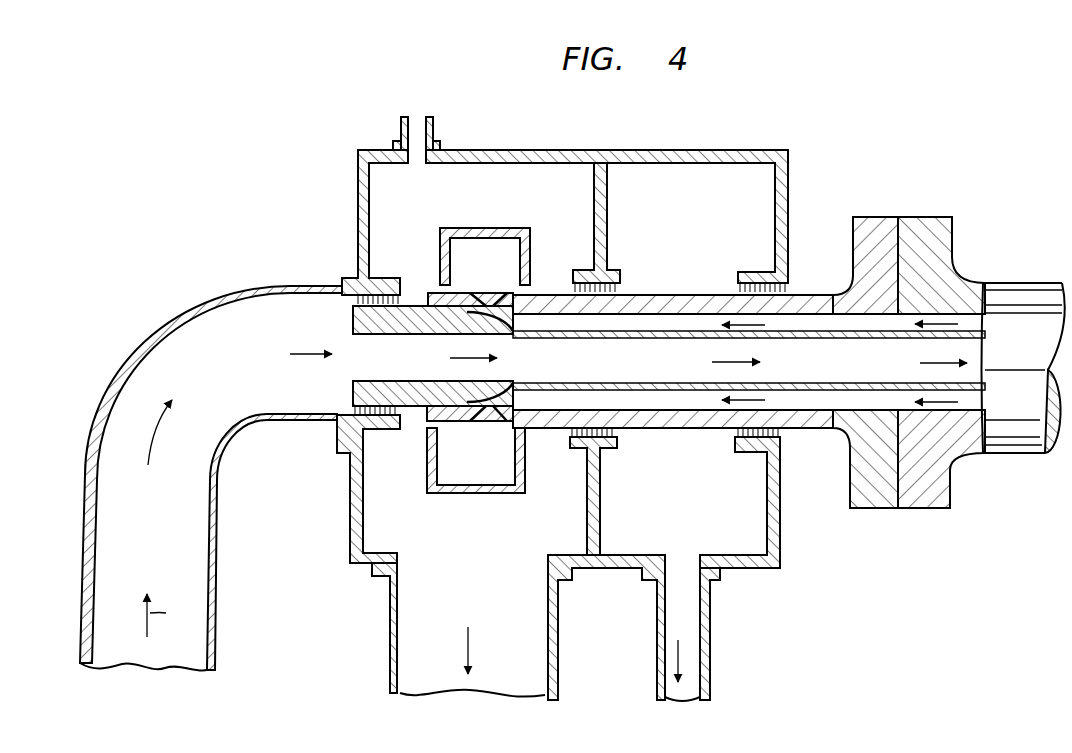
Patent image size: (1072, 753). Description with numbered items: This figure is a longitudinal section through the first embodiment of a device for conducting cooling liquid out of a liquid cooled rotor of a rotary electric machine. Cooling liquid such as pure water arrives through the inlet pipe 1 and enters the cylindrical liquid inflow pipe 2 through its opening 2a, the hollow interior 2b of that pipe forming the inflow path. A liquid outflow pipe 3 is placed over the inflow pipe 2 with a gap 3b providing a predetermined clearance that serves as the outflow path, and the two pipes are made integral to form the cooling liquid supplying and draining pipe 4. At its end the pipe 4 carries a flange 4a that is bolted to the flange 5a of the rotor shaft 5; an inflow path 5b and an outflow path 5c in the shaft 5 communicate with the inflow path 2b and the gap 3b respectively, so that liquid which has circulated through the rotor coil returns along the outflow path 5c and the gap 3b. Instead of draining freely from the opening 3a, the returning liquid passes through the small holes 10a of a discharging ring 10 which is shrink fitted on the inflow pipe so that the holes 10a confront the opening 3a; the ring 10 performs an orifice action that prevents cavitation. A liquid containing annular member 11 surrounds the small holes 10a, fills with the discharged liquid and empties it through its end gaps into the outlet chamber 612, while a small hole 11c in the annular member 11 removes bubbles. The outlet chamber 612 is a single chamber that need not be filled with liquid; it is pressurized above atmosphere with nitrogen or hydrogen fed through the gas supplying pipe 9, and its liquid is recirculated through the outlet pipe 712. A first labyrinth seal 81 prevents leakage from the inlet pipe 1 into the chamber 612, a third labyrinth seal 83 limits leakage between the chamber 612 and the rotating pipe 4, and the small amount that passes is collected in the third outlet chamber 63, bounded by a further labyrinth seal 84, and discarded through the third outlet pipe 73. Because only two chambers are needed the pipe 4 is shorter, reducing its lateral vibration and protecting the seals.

The inlet pipe 1 is at (217, 562).
The liquid inflow pipe 2 is at (418, 306).
The opening 2a is at (352, 360).
The hollow interior 2b is at (403, 380).
The liquid outflow pipe 3 is at (660, 294).
The opening 3a is at (505, 325).
The gap 3b is at (580, 338).
The cooling liquid supplying and draining pipe 4 is at (686, 374).
The flange 4a is at (870, 217).
The rotor shaft 5 is at (1040, 247).
The flange 5a is at (936, 217).
The inflow path 5b is at (978, 340).
The outflow path 5c is at (975, 406).
The gas supplying pipe 9 is at (433, 125).
The discharging ring 10 is at (455, 300).
The small holes 10a is at (507, 292).
The liquid containing annular member 11 is at (530, 232).
The small hole 11c is at (480, 232).
The third outlet chamber 63 is at (673, 178).
The outlet chamber 612 is at (382, 176).
The outlet pipe 712 is at (392, 636).
The third outlet pipe 73 is at (656, 648).
The first labyrinth seal 81 is at (410, 296).
The third labyrinth seal 83 is at (625, 290).
The labyrinth seal 84 is at (735, 286).